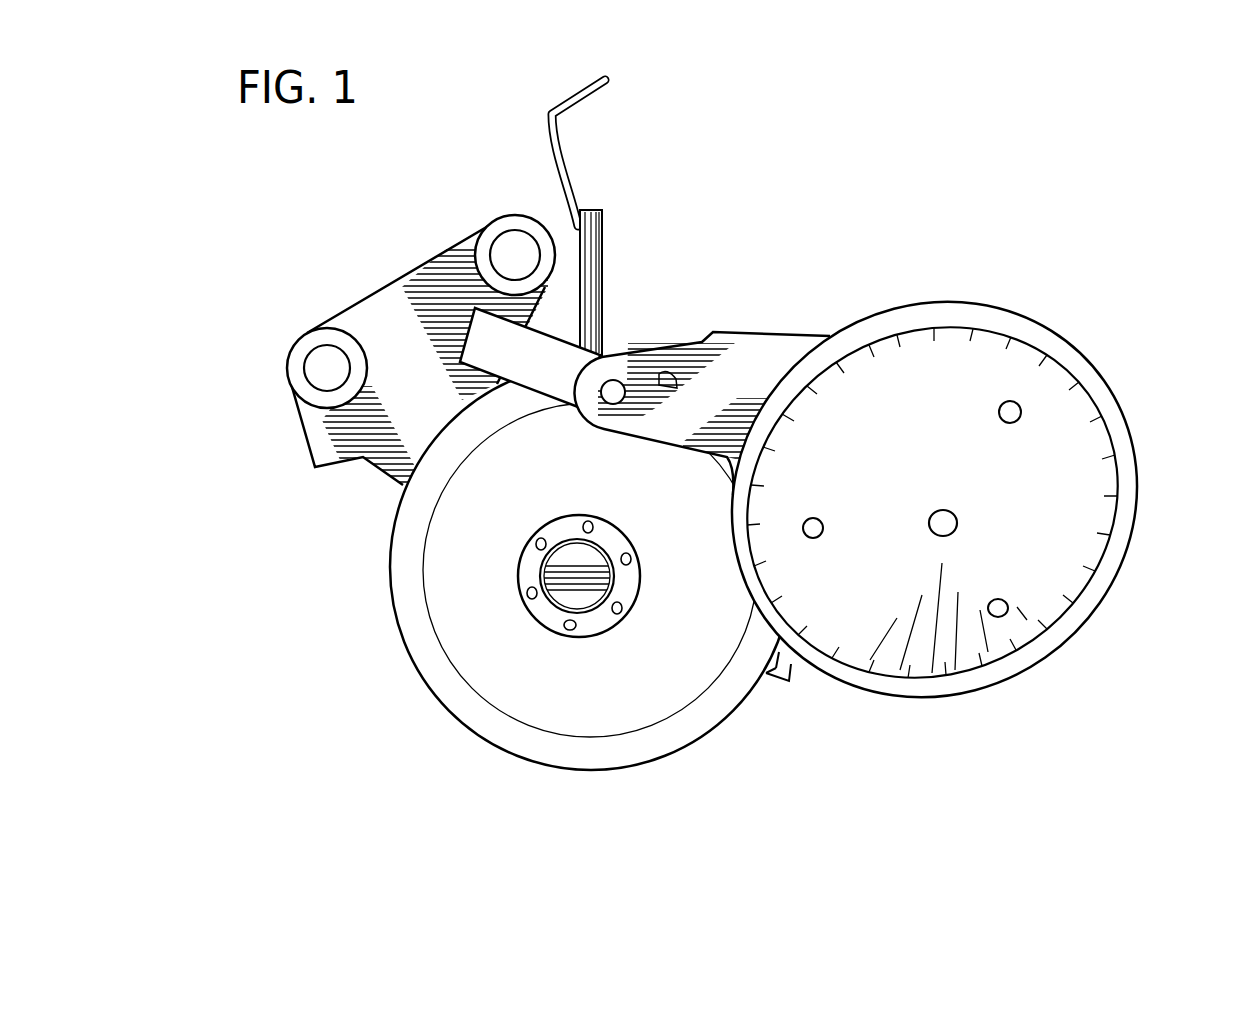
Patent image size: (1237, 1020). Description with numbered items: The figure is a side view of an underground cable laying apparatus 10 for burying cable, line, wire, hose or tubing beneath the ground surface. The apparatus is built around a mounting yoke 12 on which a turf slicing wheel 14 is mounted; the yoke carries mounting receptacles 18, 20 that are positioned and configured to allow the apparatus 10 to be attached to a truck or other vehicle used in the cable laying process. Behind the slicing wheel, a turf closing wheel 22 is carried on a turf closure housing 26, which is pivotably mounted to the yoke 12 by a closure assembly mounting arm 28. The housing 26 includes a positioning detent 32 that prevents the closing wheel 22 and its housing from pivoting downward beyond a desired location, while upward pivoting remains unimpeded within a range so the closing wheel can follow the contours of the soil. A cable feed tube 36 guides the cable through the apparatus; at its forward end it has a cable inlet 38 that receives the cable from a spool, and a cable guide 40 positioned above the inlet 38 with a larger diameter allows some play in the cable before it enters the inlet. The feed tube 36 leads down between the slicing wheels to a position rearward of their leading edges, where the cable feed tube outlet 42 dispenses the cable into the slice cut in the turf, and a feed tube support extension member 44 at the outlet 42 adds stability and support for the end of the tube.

The underground cable laying apparatus 10 is at (1100, 155).
The mounting yoke 12 is at (383, 315).
The turf slicing wheel 14 is at (483, 717).
The mounting receptacle 18 is at (507, 227).
The mounting receptacle 20 is at (298, 347).
The turf closing wheel 22 is at (1095, 447).
The turf closure housing 26 is at (702, 387).
The closure assembly mounting arm 28 is at (550, 350).
The positioning detent 32 is at (667, 370).
The cable feed tube 36 is at (624, 234).
The cable inlet 38 is at (592, 207).
The cable guide 40 is at (572, 92).
The cable feed tube outlet 42 is at (790, 680).
The feed tube support extension member 44 is at (765, 675).